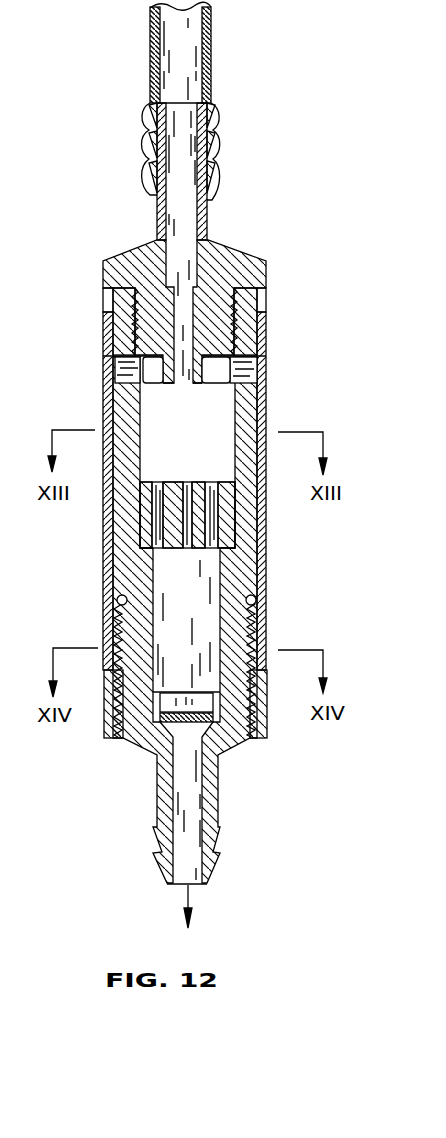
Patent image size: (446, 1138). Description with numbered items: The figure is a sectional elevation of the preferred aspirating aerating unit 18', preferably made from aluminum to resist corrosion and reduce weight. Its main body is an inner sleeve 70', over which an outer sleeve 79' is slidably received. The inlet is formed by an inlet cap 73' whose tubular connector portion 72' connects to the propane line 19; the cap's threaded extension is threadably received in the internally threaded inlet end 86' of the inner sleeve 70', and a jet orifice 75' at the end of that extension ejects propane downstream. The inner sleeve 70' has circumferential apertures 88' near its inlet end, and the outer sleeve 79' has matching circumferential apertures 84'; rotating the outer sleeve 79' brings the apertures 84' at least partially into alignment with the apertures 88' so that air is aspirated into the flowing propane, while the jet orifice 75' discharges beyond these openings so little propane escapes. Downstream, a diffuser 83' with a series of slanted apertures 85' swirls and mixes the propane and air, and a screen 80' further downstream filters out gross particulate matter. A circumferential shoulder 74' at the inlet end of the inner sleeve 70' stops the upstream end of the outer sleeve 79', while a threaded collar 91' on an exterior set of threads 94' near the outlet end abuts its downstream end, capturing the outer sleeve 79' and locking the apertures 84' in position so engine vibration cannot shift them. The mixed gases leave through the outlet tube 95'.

The line 19 is at (152, 50).
The tubular connector portion 72' is at (208, 171).
The inlet cap 73' is at (184, 292).
The circumferential shoulder 74' is at (163, 321).
The internally threaded inlet end 86' is at (148, 321).
The circumferential apertures 84' is at (186, 368).
The circumferential apertures 88' is at (186, 384).
The jet orifice 75' is at (241, 390).
The diffuser 83' is at (187, 491).
The apertures 85' is at (189, 511).
The outer sleeve 79' is at (159, 491).
The inner sleeve 70' is at (216, 620).
The exterior set of threads 94' is at (217, 608).
The screen 80' is at (143, 732).
The threaded collar 91' is at (215, 684).
The aspirating aerating unit 18' is at (99, 799).
The outlet tube 95' is at (156, 861).